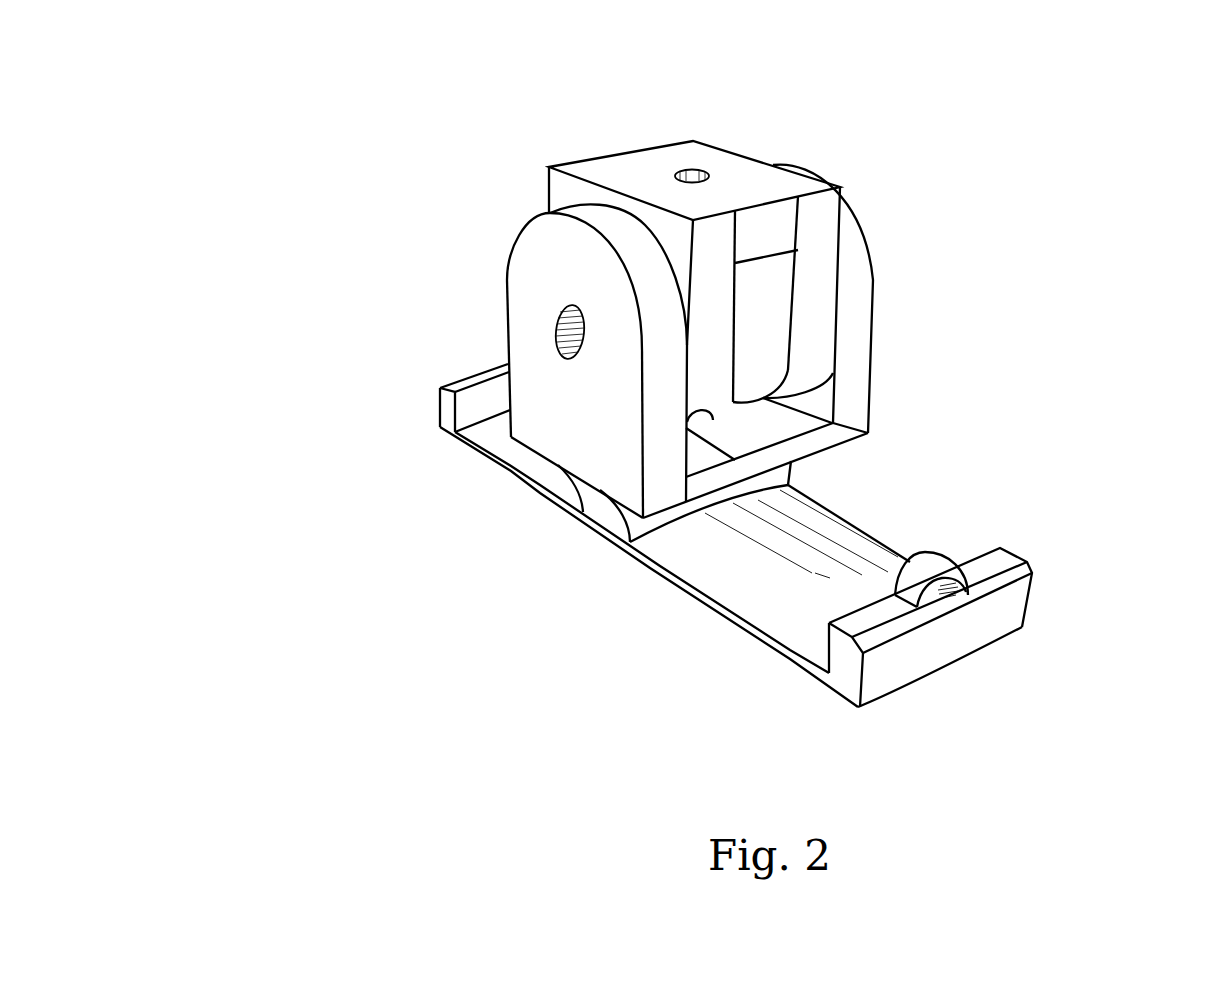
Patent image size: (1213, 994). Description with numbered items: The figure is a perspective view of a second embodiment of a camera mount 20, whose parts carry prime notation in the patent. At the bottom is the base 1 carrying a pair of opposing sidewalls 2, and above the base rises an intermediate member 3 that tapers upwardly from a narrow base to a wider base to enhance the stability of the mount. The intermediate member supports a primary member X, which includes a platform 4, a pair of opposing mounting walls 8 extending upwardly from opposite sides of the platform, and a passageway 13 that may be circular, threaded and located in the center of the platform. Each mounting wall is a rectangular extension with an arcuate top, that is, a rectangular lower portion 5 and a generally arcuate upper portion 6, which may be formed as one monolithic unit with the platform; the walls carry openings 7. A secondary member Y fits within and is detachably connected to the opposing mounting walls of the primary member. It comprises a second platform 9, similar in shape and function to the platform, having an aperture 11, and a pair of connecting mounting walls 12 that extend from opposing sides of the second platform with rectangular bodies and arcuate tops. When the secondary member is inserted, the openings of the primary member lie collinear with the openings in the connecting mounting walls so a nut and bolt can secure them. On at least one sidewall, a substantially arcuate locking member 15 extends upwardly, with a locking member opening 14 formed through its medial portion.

The base 1 is at (793, 584).
The pair of opposing sidewalls 2 is at (443, 418).
The intermediate member 3 is at (603, 507).
The platform 4 is at (753, 442).
The lower portion 5 is at (580, 413).
The upper portion 6 is at (542, 237).
The openings 7 is at (566, 341).
The pair of opposing mounting walls 8 is at (537, 270).
The second platform 9 is at (755, 180).
The aperture 11 is at (693, 173).
The pair of connecting mounting walls 12 is at (710, 313).
The passageway 13 is at (790, 437).
The locking member opening 14 is at (950, 578).
The locking member 15 is at (943, 591).
The camera mount 20 is at (285, 674).
The primary member X is at (489, 313).
The secondary member Y is at (600, 134).